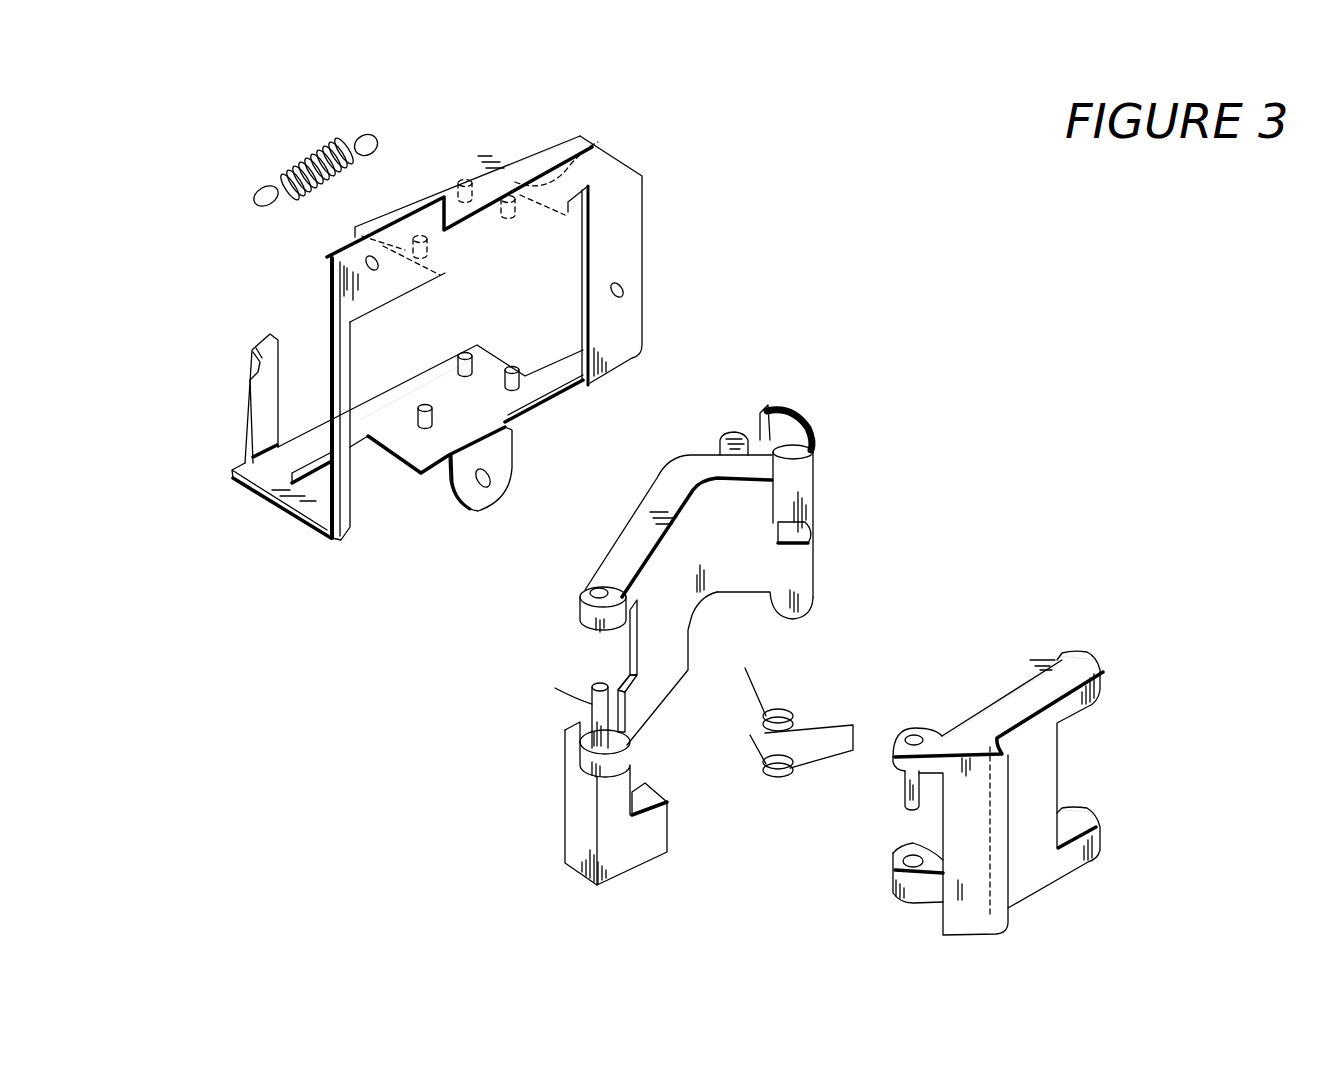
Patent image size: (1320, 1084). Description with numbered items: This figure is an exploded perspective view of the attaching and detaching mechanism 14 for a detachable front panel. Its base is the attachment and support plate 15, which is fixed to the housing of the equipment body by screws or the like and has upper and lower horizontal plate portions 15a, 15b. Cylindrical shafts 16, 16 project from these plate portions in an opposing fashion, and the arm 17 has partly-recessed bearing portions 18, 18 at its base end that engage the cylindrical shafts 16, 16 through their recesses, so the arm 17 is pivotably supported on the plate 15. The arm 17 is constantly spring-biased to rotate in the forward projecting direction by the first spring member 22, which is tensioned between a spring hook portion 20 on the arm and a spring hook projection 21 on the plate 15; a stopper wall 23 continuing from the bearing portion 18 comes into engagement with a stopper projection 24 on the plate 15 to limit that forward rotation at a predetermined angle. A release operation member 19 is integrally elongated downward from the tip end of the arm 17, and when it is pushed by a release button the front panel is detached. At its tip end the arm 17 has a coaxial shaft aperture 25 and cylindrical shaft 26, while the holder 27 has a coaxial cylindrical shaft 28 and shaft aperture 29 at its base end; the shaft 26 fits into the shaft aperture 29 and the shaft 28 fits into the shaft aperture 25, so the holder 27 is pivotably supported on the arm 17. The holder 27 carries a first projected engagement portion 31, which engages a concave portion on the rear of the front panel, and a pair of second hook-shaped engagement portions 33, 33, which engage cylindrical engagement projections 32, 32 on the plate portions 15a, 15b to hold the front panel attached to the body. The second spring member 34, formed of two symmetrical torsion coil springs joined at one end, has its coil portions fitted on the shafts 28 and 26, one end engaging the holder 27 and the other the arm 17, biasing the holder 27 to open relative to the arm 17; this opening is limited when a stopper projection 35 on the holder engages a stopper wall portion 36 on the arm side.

The attaching and detaching mechanism 14 is at (445, 618).
The attachment and support plate 15 is at (642, 236).
The upper horizontal plate portion 15a is at (497, 175).
The lower horizontal plate portion 15b is at (490, 358).
The cylindrical shaft 16 is at (597, 144).
The arm 17 is at (683, 458).
The bearing portion 18 is at (807, 463).
The release operation member 19 is at (642, 840).
The spring hook portion 20 is at (733, 430).
The spring hook projection 21 is at (262, 402).
The first spring member 22 is at (307, 155).
The stopper wall 23 is at (782, 408).
The stopper projection 24 is at (464, 184).
The shaft aperture 25 is at (598, 593).
The cylindrical shaft 26 is at (597, 708).
The holder 27 is at (1077, 868).
The cylindrical shaft 28 is at (905, 790).
The shaft aperture 29 is at (893, 868).
The first projected engagement portion 31 is at (1010, 779).
The cylindrical engagement projection 32 is at (413, 234).
The second hook-shaped engagement portion 33 is at (1072, 656).
The second spring member 34 is at (778, 772).
The stopper projection 35 is at (895, 848).
The stopper wall portion 36 is at (622, 682).